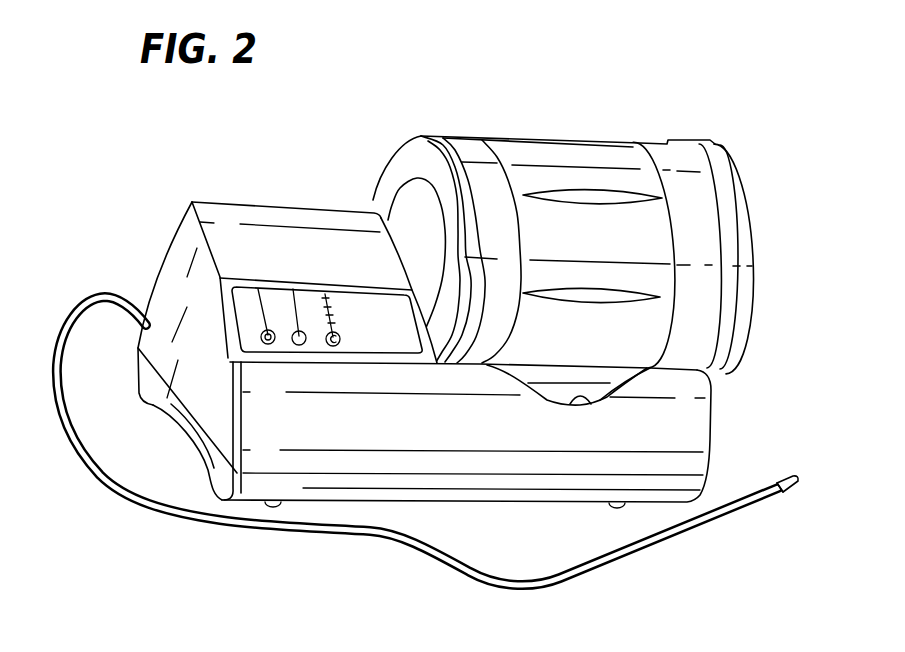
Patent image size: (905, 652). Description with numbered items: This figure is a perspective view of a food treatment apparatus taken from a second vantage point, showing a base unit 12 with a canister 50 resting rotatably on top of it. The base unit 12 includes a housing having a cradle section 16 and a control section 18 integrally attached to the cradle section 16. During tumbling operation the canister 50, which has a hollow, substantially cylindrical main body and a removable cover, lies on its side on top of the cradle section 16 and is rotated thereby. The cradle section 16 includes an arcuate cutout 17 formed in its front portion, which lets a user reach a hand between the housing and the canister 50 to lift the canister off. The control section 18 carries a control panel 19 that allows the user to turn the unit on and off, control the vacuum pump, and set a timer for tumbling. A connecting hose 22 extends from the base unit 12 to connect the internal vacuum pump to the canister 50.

The base unit 12 is at (138, 270).
The cradle section 16 is at (728, 406).
The arcuate cutout 17 is at (594, 406).
The control section 18 is at (156, 194).
The control panel 19 is at (383, 337).
The connecting hose 22 is at (627, 578).
The canister 50 is at (628, 101).